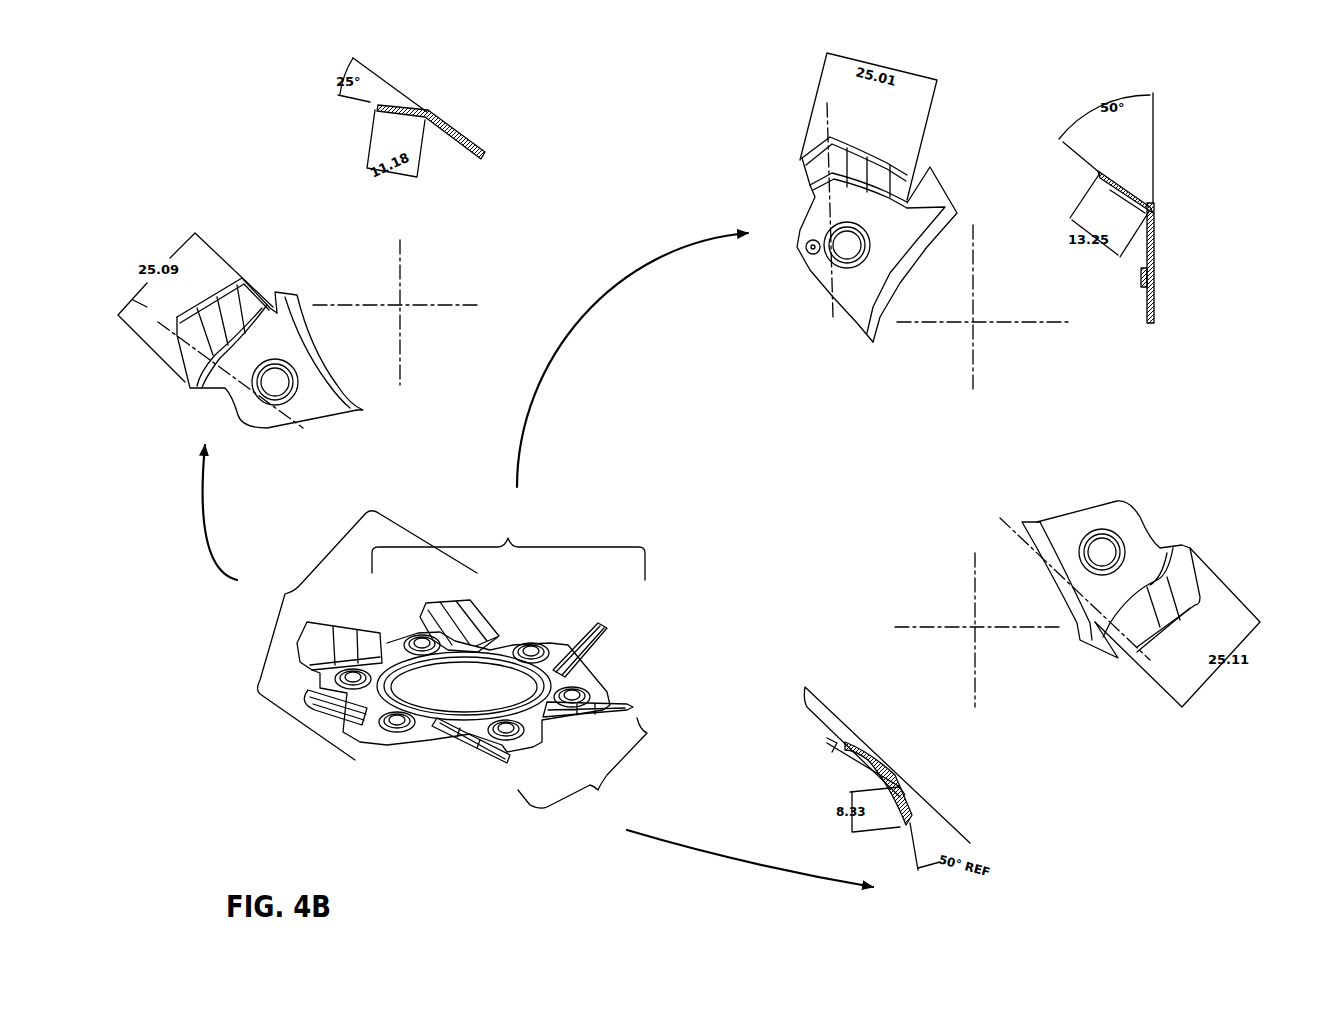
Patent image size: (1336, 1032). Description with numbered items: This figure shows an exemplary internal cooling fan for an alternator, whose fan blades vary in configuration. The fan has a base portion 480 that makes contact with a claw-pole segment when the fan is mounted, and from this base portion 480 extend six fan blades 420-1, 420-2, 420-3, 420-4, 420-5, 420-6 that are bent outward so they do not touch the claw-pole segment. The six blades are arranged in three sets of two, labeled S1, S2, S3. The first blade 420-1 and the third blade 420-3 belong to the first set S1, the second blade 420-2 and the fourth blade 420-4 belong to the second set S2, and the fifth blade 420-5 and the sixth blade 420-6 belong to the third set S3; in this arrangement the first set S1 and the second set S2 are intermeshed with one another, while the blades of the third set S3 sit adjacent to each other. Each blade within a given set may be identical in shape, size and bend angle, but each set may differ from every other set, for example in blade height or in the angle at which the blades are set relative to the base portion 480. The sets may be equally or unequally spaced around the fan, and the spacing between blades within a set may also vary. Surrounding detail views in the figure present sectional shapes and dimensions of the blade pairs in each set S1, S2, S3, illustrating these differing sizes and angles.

The first fan blade 420-1 is at (607, 623).
The second fan blade 420-2 is at (472, 608).
The third fan blade 420-3 is at (337, 623).
The fourth fan blade 420-4 is at (355, 743).
The fifth fan blade 420-5 is at (507, 760).
The sixth fan blade 420-6 is at (632, 713).
The base portion 480 is at (523, 647).
The first blade set S1 is at (508, 539).
The second blade set S2 is at (340, 602).
The third blade set S3 is at (695, 802).